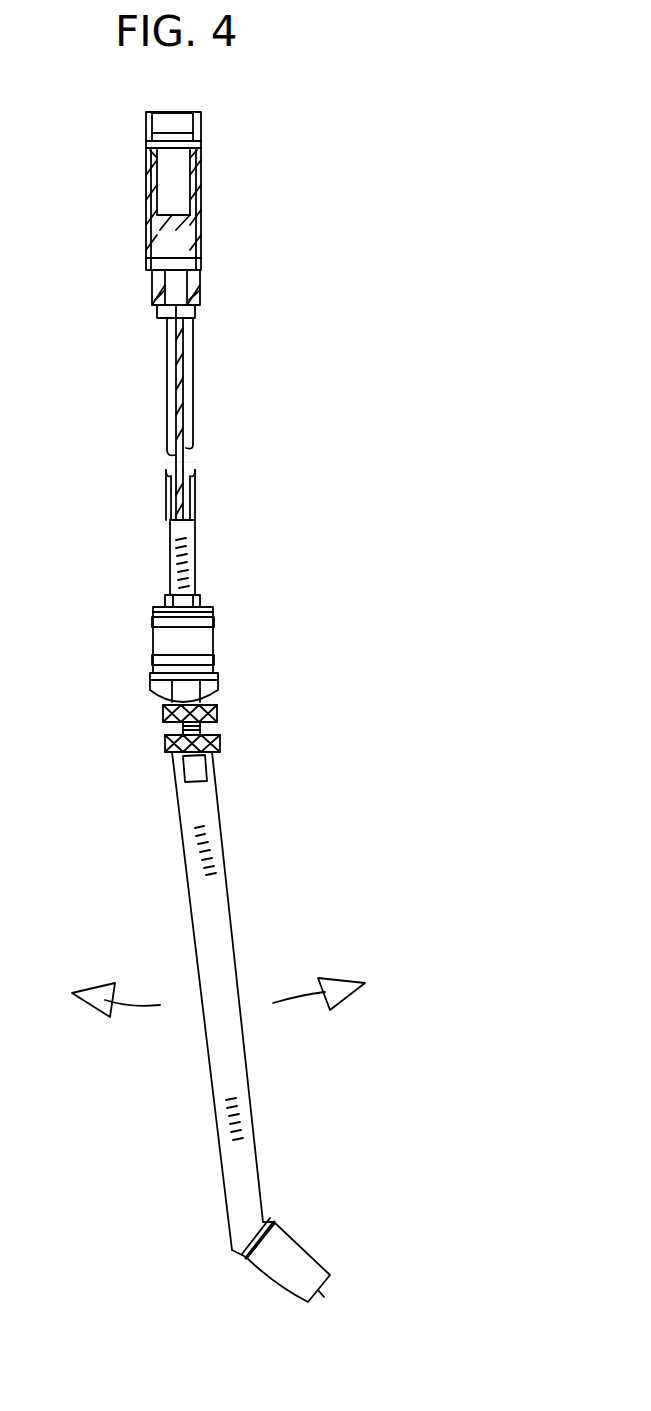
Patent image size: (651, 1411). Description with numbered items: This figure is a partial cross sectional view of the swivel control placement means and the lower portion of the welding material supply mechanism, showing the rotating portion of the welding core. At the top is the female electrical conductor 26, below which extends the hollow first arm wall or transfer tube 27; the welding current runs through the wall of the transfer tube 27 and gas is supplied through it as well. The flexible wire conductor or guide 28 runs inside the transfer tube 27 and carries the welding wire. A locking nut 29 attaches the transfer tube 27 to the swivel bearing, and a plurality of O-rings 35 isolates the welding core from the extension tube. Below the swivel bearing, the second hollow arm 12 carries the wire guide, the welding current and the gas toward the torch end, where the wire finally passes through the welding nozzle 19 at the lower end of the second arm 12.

The second arm 12 is at (217, 1066).
The welding nozzle 19 is at (302, 1257).
The female electrical conductor 26 is at (198, 157).
The transfer tube 27 is at (187, 358).
The flexible wire conductor or guide 28 is at (183, 463).
The locking nut 29 is at (192, 600).
The O-rings 35 is at (152, 622).